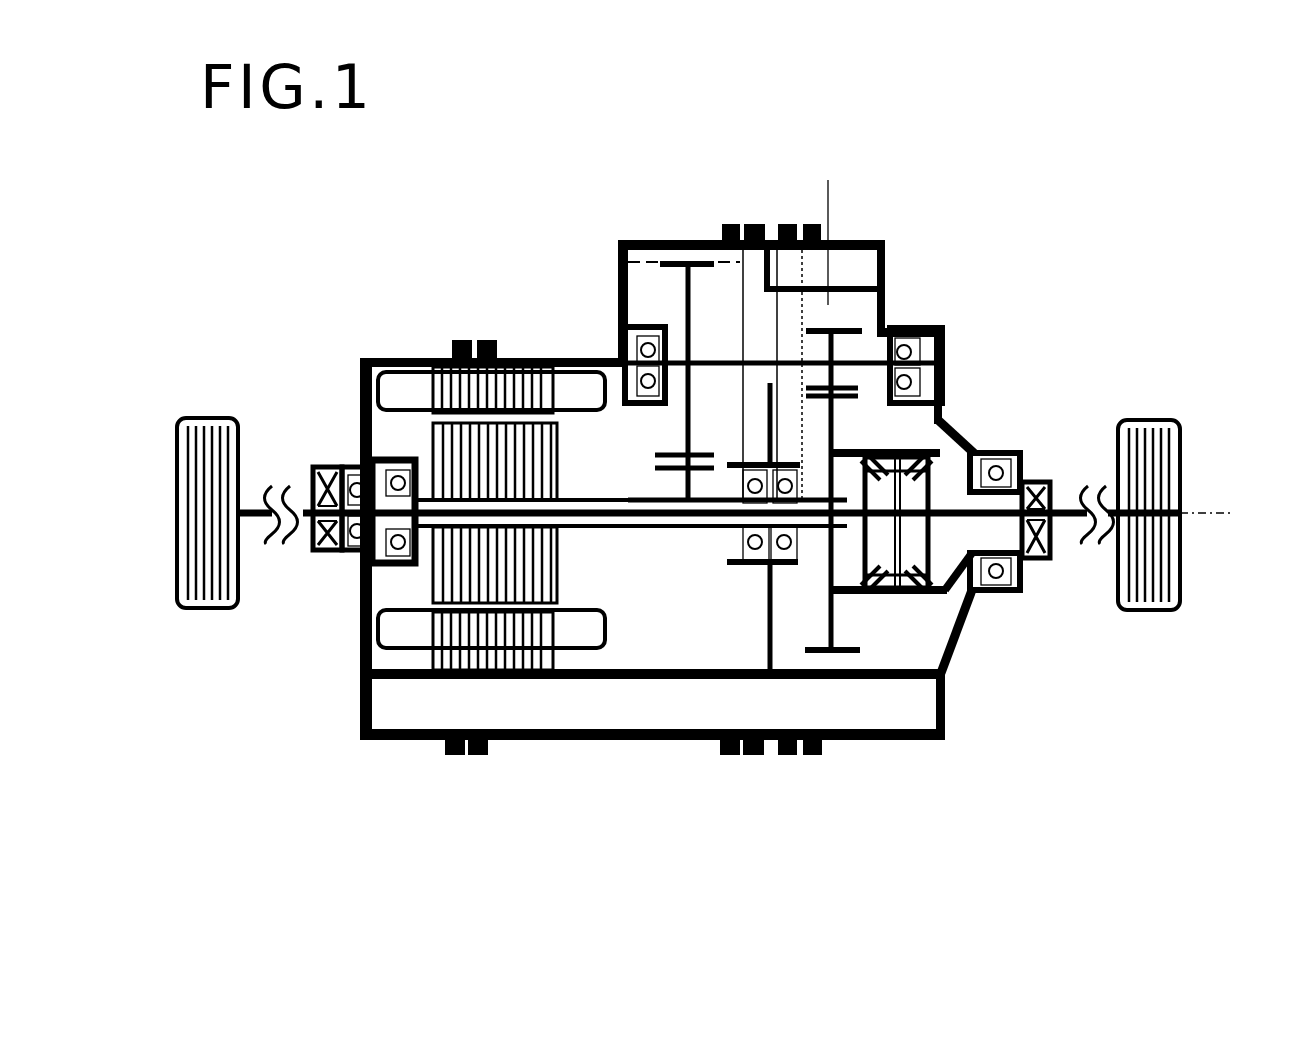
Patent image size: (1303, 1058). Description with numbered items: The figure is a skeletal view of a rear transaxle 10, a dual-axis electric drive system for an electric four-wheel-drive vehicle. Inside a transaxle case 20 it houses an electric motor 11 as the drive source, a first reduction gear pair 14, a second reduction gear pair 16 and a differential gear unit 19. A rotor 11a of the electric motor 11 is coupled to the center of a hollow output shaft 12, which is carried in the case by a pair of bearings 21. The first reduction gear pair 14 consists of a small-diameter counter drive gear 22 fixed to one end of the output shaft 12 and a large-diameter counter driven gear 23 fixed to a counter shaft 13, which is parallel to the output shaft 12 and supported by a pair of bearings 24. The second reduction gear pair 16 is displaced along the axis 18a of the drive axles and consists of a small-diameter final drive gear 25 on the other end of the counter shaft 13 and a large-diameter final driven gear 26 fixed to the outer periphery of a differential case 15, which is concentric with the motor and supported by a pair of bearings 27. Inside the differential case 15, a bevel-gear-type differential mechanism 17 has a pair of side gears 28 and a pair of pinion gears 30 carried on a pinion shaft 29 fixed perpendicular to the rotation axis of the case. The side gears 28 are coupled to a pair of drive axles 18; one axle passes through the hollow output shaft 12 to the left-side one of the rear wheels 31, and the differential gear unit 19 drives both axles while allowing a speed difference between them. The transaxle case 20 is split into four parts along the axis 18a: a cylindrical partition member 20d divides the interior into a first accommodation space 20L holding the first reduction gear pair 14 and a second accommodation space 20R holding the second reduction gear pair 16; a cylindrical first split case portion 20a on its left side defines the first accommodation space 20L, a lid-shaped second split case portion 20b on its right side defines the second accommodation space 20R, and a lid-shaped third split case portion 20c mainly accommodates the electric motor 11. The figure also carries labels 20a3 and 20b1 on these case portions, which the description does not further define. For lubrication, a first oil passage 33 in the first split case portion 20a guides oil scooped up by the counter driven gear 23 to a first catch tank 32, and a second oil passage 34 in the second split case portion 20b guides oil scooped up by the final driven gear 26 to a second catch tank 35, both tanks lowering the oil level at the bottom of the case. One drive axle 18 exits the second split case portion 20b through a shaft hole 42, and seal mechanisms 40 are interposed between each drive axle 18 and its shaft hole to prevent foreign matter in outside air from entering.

The rear transaxle 10 is at (1038, 239).
The electric motor 11 is at (410, 576).
The rotor 11a is at (413, 526).
The output shaft 12 is at (630, 687).
The counter shaft 13 is at (682, 341).
The first reduction gear pair 14 is at (710, 284).
The differential case 15 is at (910, 635).
The second reduction gear pair 16 is at (906, 250).
The differential mechanism 17 is at (966, 467).
The drive axles 18 is at (735, 591).
The axis 18a is at (1206, 541).
The differential gear unit 19 is at (1018, 665).
The transaxle case 20 is at (684, 508).
The first split case portion 20a is at (652, 616).
The second split case portion 20b is at (796, 522).
The third split case portion 20c is at (641, 607).
The partition member 20d is at (737, 683).
The first accommodation space 20L is at (654, 742).
The second accommodation space 20R is at (848, 250).
The support wall 20a3 is at (746, 341).
The gear case wall 20b1 is at (930, 389).
The bearings 21 is at (755, 160).
The counter drive gear 22 is at (670, 657).
The counter driven gear 23 is at (662, 195).
The bearings 24 is at (735, 317).
The final drive gear 25 is at (850, 416).
The final driven gear 26 is at (832, 744).
The bearings 27 is at (781, 480).
The side gears 28 is at (968, 671).
The pinion shaft 29 is at (849, 614).
The pinion gears 30 is at (958, 335).
The rear wheels 31 is at (678, 573).
The first catch tank 32 is at (491, 607).
The first oil passage 33 is at (607, 221).
The second oil passage 34 is at (835, 752).
The second catch tank 35 is at (828, 227).
The seal mechanisms 40 is at (307, 483).
The shaft hole 42 is at (1043, 497).